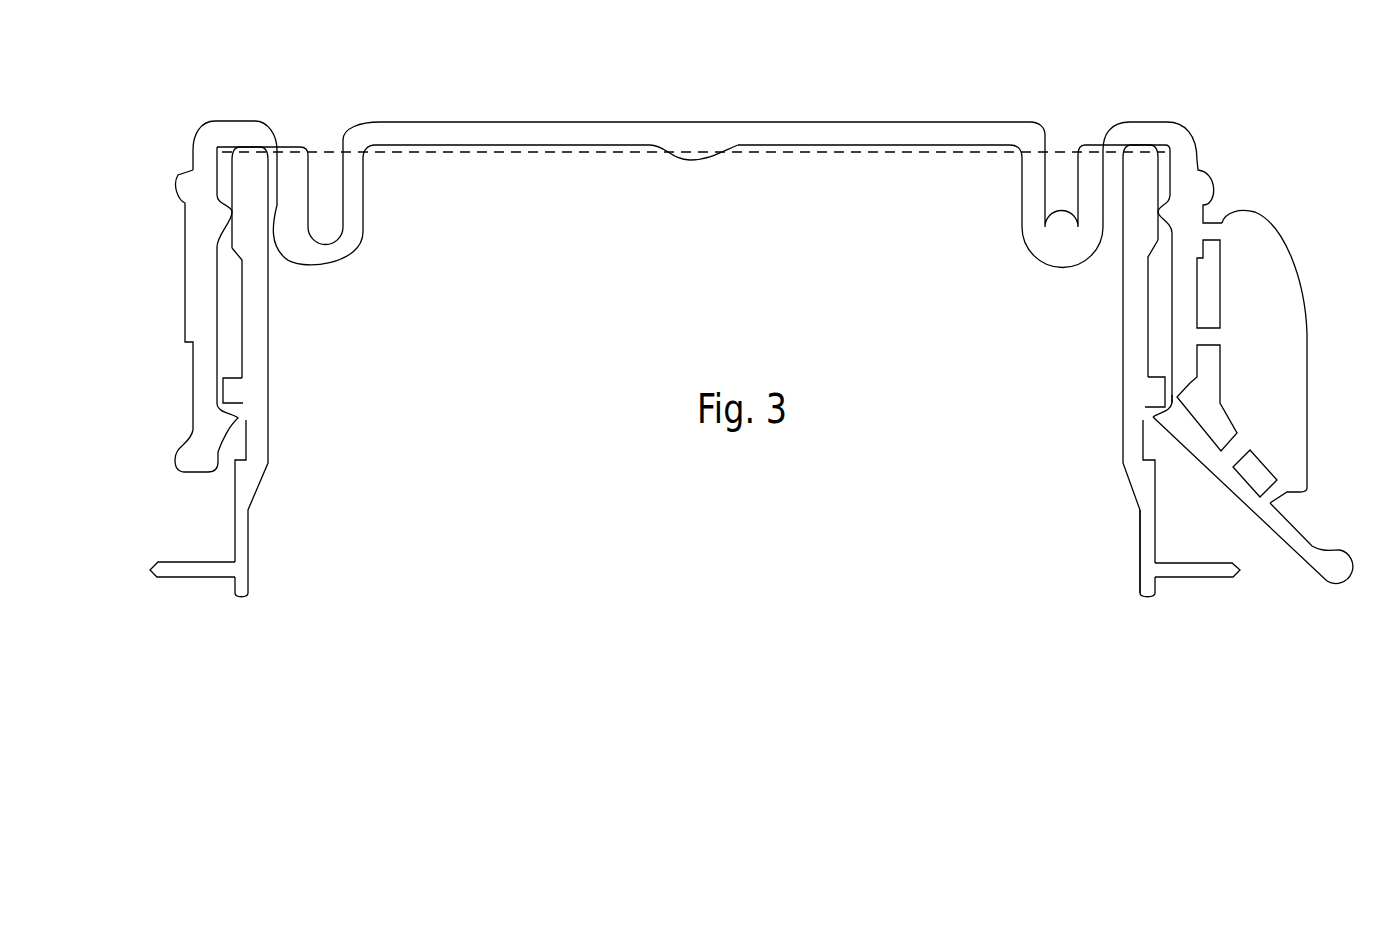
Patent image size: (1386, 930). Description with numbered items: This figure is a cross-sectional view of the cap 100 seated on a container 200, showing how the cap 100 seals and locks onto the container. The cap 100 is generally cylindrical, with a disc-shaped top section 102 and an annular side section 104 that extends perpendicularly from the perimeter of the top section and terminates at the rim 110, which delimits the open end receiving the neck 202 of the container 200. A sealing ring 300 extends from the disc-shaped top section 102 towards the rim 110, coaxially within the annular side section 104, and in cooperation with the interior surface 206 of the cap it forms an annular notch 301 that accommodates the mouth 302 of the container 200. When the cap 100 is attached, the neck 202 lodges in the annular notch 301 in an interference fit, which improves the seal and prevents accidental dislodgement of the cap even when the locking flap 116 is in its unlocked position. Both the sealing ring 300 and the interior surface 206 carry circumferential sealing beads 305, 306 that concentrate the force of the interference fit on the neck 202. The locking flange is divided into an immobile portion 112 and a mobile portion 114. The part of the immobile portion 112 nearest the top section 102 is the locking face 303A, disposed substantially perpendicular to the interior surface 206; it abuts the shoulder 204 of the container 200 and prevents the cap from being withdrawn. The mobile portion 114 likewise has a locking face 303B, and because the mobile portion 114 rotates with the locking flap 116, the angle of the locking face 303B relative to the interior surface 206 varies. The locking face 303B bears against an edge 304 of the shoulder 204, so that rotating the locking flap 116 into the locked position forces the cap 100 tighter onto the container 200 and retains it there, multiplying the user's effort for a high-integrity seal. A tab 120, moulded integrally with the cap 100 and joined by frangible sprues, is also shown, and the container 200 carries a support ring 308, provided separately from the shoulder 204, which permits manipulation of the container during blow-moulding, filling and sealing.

The cap 100 is at (878, 88).
The disc-shaped top section 102 is at (515, 122).
The annular side section 104 is at (195, 303).
The rim 110 is at (192, 472).
The immobile portion of the locking flange 112 is at (227, 420).
The mobile portion of the locking flange 114 is at (1145, 412).
The locking flap 116 is at (1240, 495).
The tab 120 is at (1253, 253).
The container 200 is at (1140, 578).
The neck 202 is at (1123, 322).
The shoulder 204 is at (235, 370).
The interior surface 206 is at (225, 150).
The sealing ring 300 is at (353, 247).
The annular notch 301 is at (277, 160).
The mouth 302 is at (778, 152).
The locking face 303A is at (250, 399).
The locking face 303B is at (1134, 401).
The edge of the shoulder 304 is at (1175, 405).
The sealing bead 305 is at (1107, 200).
The sealing bead 306 is at (1178, 135).
The support ring 308 is at (202, 572).